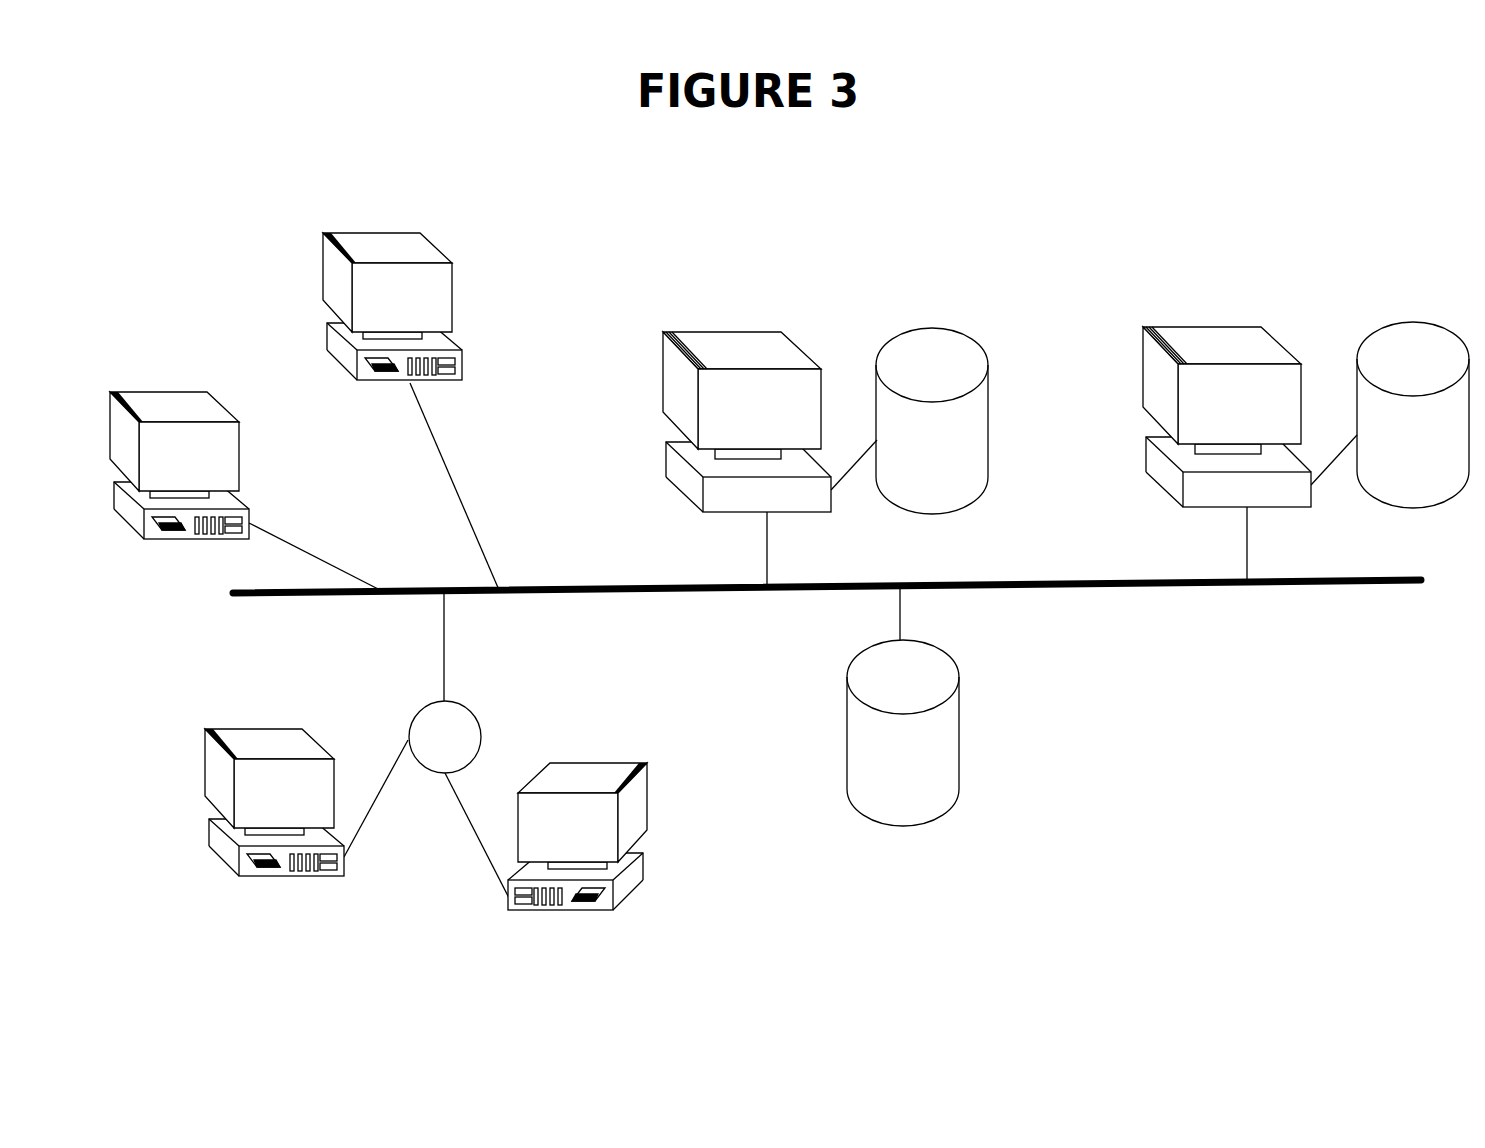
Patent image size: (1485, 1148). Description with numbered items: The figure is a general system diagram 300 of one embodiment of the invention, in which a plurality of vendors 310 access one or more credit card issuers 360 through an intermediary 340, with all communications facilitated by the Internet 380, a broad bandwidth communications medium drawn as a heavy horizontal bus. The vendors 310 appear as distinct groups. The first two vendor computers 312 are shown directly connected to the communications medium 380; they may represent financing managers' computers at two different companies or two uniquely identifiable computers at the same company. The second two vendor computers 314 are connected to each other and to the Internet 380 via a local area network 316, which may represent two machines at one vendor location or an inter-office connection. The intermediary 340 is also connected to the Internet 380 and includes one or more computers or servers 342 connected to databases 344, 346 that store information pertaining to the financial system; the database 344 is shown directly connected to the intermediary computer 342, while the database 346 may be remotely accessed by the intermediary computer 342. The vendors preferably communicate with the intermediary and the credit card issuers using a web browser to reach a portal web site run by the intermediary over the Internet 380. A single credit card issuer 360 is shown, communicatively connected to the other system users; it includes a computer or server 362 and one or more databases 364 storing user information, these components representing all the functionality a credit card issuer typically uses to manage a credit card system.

The general system diagram 300 is at (1286, 795).
The vendors 310 is at (378, 577).
The first two vendor computers 312 is at (247, 517).
The second two vendor computers 314 is at (315, 878).
The local area network 316 is at (458, 718).
The intermediary 340 is at (825, 528).
The intermediary computer or server 342 is at (770, 459).
The database 344 is at (932, 421).
The database 346 is at (903, 706).
The credit card issuer 360 is at (1306, 387).
The computer or server 362 is at (1250, 454).
The databases 364 is at (1413, 415).
The Internet 380 is at (620, 585).